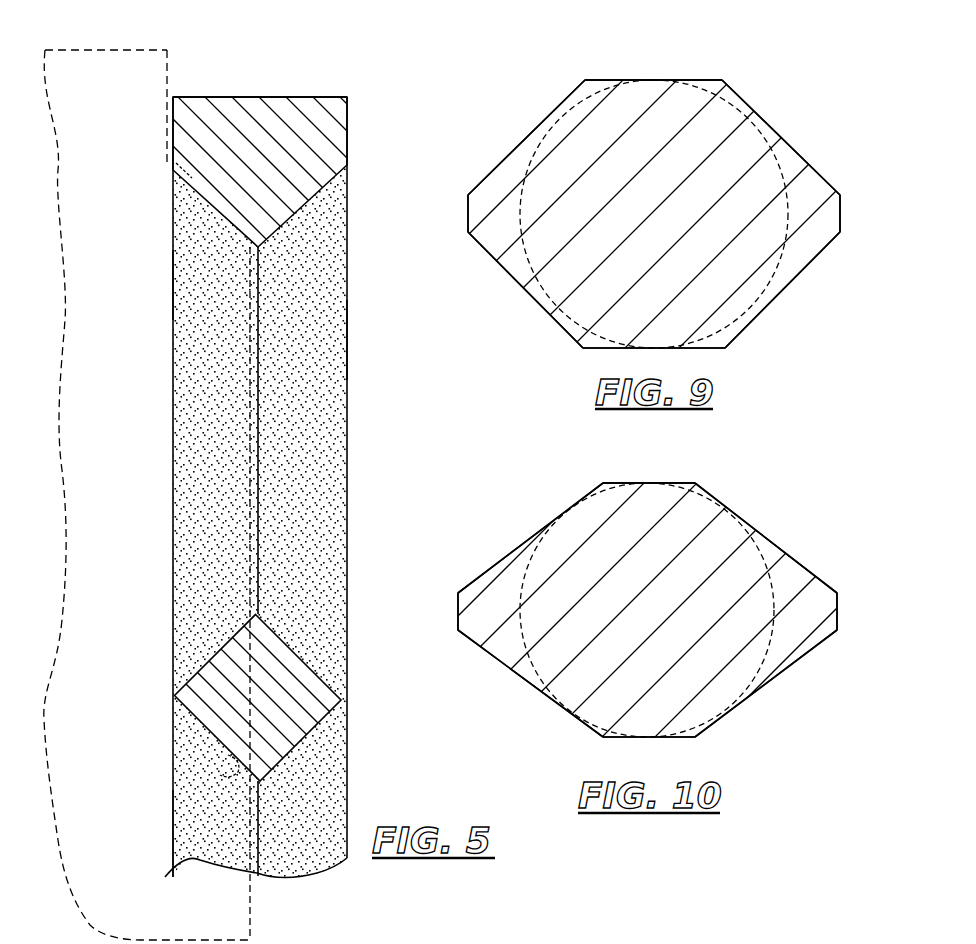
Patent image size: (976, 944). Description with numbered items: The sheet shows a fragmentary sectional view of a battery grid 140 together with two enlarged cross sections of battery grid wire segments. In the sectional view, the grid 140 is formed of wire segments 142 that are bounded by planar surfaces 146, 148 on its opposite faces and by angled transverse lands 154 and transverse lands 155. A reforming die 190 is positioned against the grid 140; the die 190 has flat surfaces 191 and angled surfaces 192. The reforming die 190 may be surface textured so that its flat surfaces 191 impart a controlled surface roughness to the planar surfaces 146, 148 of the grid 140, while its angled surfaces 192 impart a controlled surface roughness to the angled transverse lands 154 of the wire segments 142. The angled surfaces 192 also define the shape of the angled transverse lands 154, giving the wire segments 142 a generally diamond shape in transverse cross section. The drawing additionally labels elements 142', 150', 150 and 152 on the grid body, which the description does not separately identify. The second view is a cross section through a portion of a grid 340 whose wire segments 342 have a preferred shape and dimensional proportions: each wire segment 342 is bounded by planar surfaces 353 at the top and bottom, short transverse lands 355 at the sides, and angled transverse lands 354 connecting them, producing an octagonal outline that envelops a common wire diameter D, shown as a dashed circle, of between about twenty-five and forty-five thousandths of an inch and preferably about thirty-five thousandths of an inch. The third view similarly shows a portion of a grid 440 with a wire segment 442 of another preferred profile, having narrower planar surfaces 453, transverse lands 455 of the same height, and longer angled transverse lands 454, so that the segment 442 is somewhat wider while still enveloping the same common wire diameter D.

In FIG. 5, the grid 140 is at (140, 104).
In FIG. 5, the wire segments 142 is at (336, 468).
In FIG. 5, the core member (alternate) 142' is at (351, 185).
In FIG. 5, the planar surface 146 is at (173, 282).
In FIG. 5, the planar surface 148 is at (345, 338).
In FIG. 5, the first core portion 150 is at (235, 690).
In FIG. 5, the first core portion (alternate) 150' is at (351, 185).
In FIG. 5, the second core portion 152 is at (190, 810).
In FIG. 5, the angled transverse lands 154 is at (215, 200).
In FIG. 5, the transverse lands 155 is at (266, 97).
In FIG. 5, the reforming die 190 is at (78, 54).
In FIG. 5, the flat surfaces 191 is at (170, 65).
In FIG. 5, the angled surfaces 192 is at (178, 165).
In FIG. 9, the grid 340 is at (758, 61).
In FIG. 9, the wire segments 342 is at (585, 78).
In FIG. 9, the planar surfaces 353 is at (712, 78).
In FIG. 9, the angled transverse lands 354 is at (530, 135).
In FIG. 9, the transverse lands 355 is at (842, 213).
In FIG. 10, the grid 440 is at (528, 490).
In FIG. 10, the wire segment 442 is at (603, 482).
In FIG. 10, the planar surfaces 453 is at (658, 482).
In FIG. 10, the angled transverse lands 454 is at (533, 533).
In FIG. 10, the transverse lands 455 is at (837, 603).
In FIG. 9, the common wire diameter D is at (740, 100).
In FIG. 10, the common wire diameter D is at (760, 553).